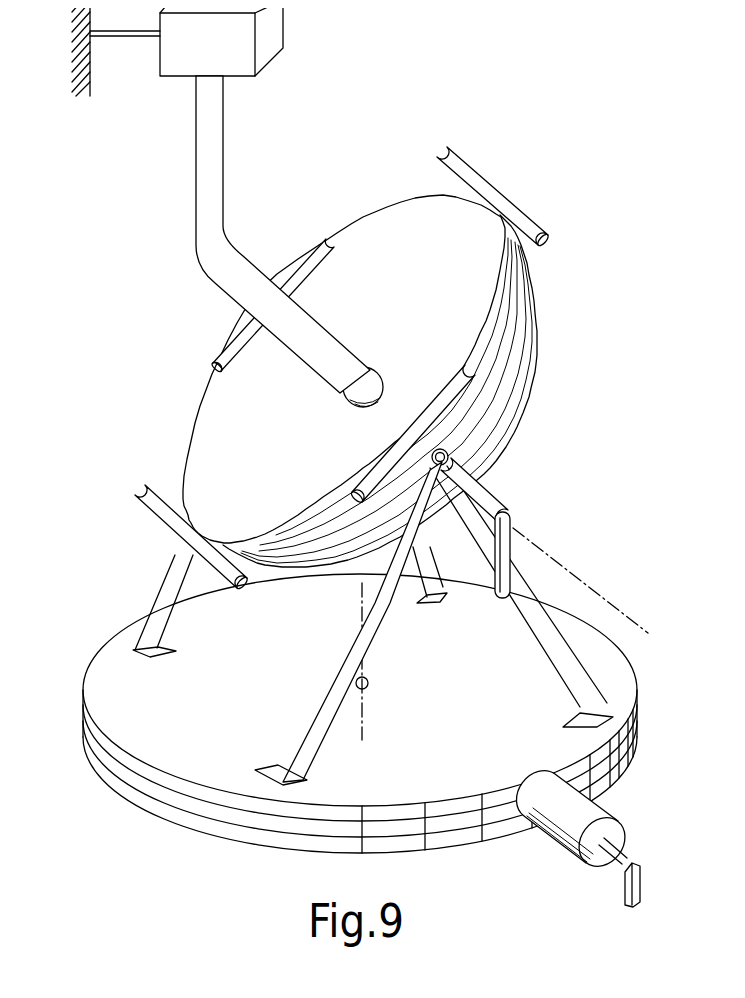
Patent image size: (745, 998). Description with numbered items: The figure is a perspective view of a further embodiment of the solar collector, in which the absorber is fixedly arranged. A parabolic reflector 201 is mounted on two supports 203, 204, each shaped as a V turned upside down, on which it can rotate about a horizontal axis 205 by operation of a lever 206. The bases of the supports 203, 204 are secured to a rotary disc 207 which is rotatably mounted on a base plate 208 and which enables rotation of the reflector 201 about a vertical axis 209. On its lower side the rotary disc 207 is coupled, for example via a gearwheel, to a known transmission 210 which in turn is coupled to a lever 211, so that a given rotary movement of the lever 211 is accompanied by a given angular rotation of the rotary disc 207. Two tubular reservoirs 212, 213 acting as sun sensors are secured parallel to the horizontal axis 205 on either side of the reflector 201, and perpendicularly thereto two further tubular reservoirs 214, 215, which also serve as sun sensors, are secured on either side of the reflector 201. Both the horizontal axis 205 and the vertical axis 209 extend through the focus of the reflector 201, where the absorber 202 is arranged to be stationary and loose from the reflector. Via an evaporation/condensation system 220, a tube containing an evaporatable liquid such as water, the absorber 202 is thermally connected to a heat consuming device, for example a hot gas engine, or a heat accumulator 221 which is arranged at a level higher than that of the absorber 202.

The parabolic reflector 201 is at (378, 233).
The absorber 202 is at (380, 376).
The support 203 is at (573, 658).
The support 204 is at (157, 629).
The horizontal axis 205 is at (589, 580).
The lever 206 is at (499, 598).
The rotary disc 207 is at (110, 711).
The base plate 208 is at (408, 838).
The vertical axis 209 is at (362, 593).
The transmission 210 is at (570, 817).
The lever 211 is at (624, 893).
The tubular reservoir 212 is at (162, 508).
The tubular reservoir 213 is at (462, 172).
The tubular reservoir 214 is at (467, 383).
The tubular reservoir 215 is at (233, 348).
The evaporation/condensation system 220 is at (203, 197).
The heat accumulator 221 is at (266, 36).